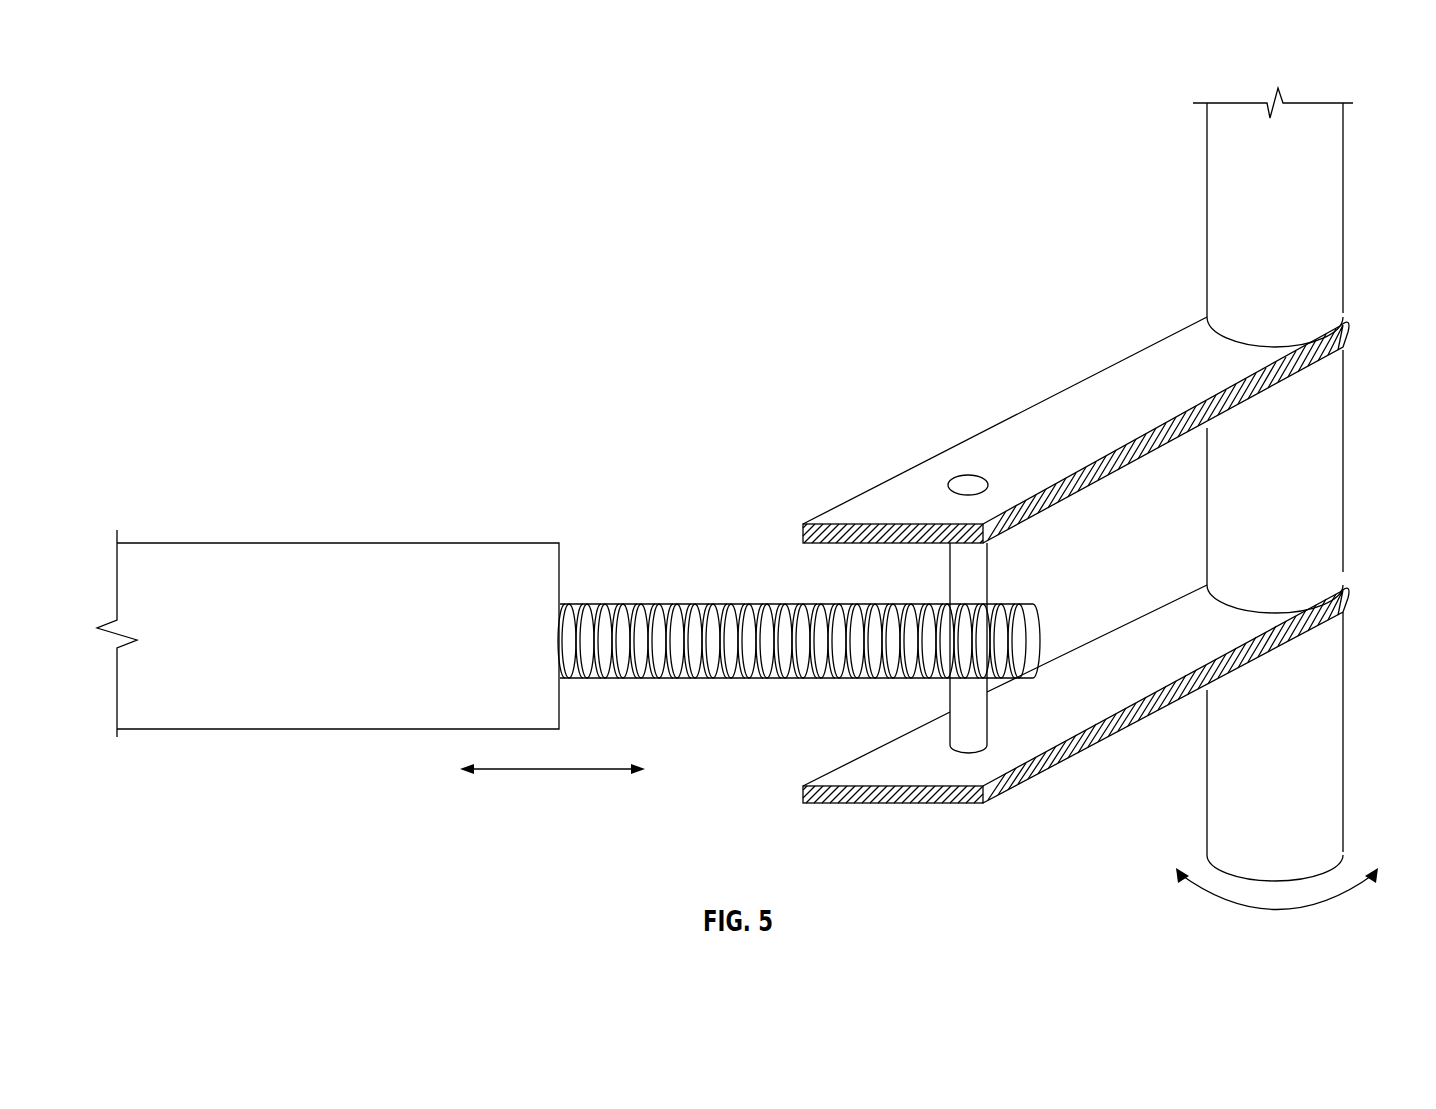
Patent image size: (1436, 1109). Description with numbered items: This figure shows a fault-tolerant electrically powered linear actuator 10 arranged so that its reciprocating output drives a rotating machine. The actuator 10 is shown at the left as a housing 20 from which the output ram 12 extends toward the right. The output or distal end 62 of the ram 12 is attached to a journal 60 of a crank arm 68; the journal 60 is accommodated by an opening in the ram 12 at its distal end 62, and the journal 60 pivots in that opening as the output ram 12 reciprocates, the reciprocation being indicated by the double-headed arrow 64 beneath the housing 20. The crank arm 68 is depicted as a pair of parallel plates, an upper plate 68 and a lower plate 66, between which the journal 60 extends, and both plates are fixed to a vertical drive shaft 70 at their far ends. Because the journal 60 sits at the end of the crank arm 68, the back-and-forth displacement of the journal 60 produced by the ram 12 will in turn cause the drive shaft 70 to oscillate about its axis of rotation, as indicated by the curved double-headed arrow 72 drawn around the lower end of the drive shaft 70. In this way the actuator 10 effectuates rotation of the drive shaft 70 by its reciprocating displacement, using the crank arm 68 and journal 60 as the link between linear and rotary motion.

The electrically powered linear actuator 10 is at (280, 500).
The output ram 12 is at (778, 683).
The housing block 20 is at (322, 728).
The journal 60 is at (975, 735).
The distal end 62 is at (1022, 612).
The reciprocation of the output ram 64 is at (527, 772).
The lower plate 66 is at (876, 805).
The crank arm 68 is at (1039, 400).
The drive shaft 70 is at (1332, 243).
The oscillation of the drive shaft 72 is at (1275, 910).